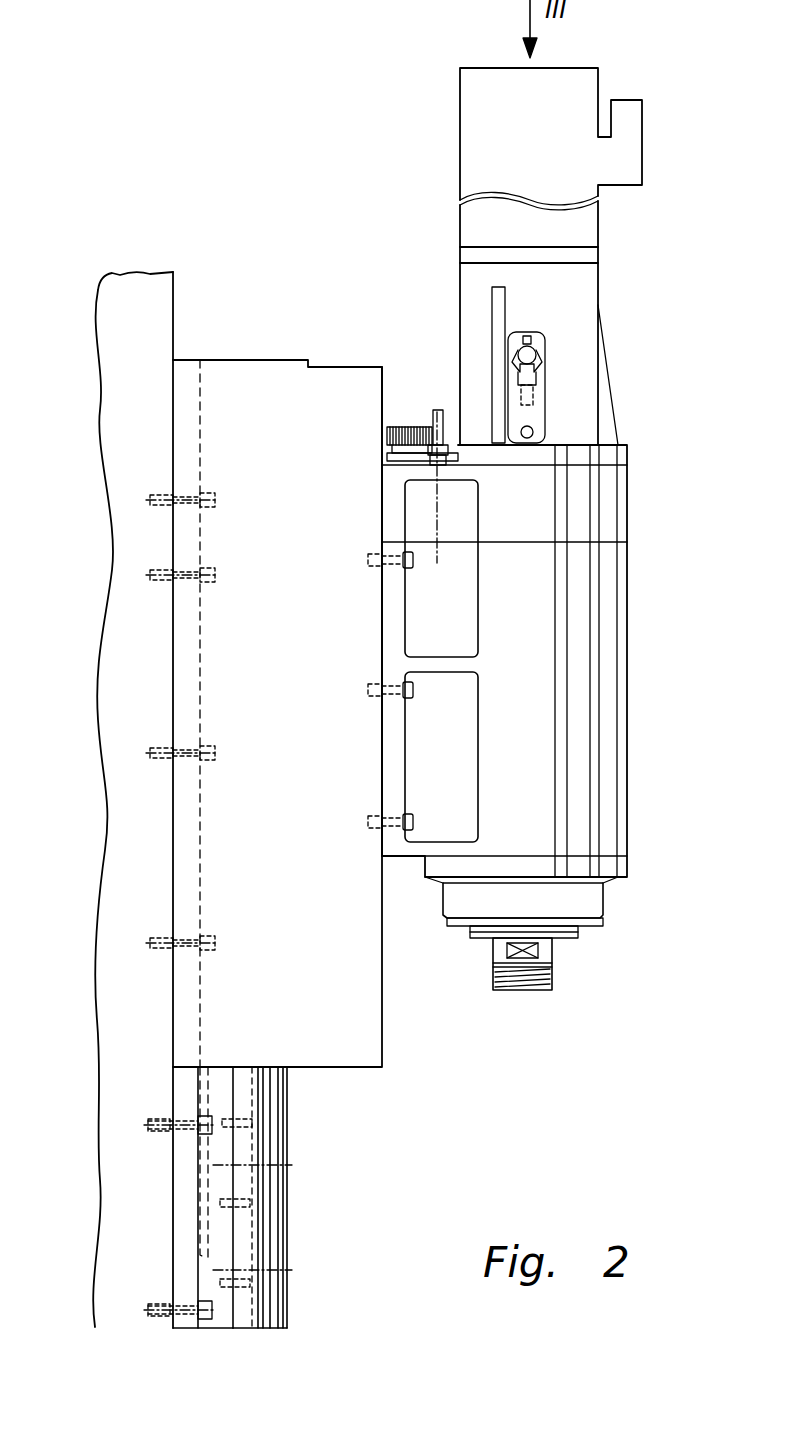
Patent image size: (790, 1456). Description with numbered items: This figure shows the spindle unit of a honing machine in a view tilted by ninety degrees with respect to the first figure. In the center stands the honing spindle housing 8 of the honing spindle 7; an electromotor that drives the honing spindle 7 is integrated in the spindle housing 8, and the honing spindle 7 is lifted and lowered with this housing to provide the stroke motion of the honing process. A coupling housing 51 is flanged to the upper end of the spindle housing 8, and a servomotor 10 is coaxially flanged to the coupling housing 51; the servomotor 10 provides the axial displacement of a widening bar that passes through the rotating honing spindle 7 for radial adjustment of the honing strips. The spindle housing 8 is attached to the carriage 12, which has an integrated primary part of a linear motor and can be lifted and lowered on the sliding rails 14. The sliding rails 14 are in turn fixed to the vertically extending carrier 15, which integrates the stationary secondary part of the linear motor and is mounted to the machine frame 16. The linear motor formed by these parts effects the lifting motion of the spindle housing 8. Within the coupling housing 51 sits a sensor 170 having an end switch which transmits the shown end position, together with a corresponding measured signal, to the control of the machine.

The honing spindle 7 is at (552, 978).
The honing spindle housing 8 is at (583, 803).
The servomotor 10 is at (470, 137).
The carriage 12 is at (355, 1005).
The sliding rails 14 is at (283, 1222).
The carrier 15 is at (218, 1243).
The machine frame 16 is at (162, 298).
The coupling housing 51 is at (470, 318).
The sensor 170 is at (540, 372).